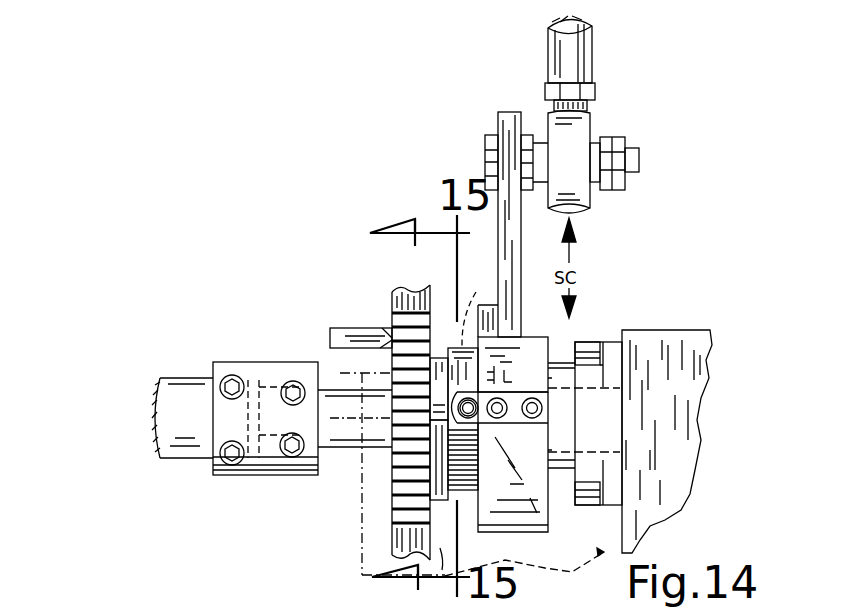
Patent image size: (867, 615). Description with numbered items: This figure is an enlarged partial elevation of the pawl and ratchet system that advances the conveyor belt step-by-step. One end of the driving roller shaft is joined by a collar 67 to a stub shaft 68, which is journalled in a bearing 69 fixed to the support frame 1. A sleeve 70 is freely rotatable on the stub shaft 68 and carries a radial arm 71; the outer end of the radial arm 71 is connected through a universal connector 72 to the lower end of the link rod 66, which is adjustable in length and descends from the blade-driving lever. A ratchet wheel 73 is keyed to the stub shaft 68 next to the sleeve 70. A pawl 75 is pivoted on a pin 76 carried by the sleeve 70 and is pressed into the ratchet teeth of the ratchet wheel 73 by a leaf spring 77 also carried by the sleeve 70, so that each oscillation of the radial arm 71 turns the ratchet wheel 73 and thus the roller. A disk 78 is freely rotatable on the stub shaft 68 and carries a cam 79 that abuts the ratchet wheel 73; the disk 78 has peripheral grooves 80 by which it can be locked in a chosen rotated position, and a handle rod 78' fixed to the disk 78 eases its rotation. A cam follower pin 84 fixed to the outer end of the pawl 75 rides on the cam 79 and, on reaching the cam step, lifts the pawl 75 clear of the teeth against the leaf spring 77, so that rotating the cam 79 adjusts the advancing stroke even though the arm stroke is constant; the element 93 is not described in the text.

The support frame 1 is at (688, 396).
The link rod 66 is at (590, 57).
The collar 67 is at (218, 475).
The stub shaft 68 is at (346, 396).
The bearing 69 is at (608, 430).
The sleeve 70 is at (540, 337).
The radial arm 71 is at (520, 256).
The universal connector 72 is at (578, 128).
The ratchet wheel 73 is at (466, 492).
The pawl 75 is at (477, 402).
The pin 76 is at (470, 300).
The leaf spring 77 is at (540, 376).
The disk 78 is at (377, 422).
The handle rod 78' is at (360, 323).
The cam 79 is at (442, 550).
The peripheral grooves 80 is at (402, 492).
The cam follower pin 84 is at (400, 472).
The housing 93 is at (262, 600).